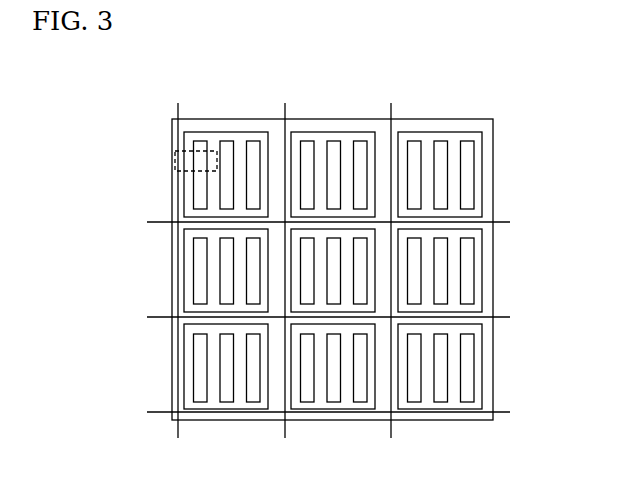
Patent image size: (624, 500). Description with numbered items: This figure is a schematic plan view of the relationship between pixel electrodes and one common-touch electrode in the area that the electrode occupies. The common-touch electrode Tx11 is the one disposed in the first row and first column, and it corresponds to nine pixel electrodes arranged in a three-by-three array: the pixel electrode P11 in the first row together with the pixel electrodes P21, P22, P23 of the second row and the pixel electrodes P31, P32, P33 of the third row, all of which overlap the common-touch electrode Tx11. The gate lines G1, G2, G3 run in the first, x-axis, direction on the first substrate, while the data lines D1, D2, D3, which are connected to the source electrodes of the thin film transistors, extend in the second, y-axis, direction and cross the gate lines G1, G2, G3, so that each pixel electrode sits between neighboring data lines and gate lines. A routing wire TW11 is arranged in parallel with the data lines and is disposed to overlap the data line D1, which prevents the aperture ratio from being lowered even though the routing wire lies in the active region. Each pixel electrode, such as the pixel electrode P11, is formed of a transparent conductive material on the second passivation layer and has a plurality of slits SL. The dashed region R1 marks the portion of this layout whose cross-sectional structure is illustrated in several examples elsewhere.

The common-touch electrode Tx11 is at (483, 118).
The routing wire TW11 is at (177, 248).
The data line D1 is at (179, 260).
The data line D2 is at (284, 261).
The data line D3 is at (391, 261).
The gate line G1 is at (317, 223).
The gate line G2 is at (317, 318).
The gate line G3 is at (317, 413).
The pixel electrode P11 is at (333, 139).
The pixel electrode P21 is at (185, 270).
The pixel electrode P22 is at (372, 305).
The pixel electrode P23 is at (482, 268).
The pixel electrode P31 is at (227, 409).
The pixel electrode P32 is at (334, 409).
The pixel electrode P33 is at (440, 409).
The slit SL is at (253, 142).
The region R1 is at (176, 152).